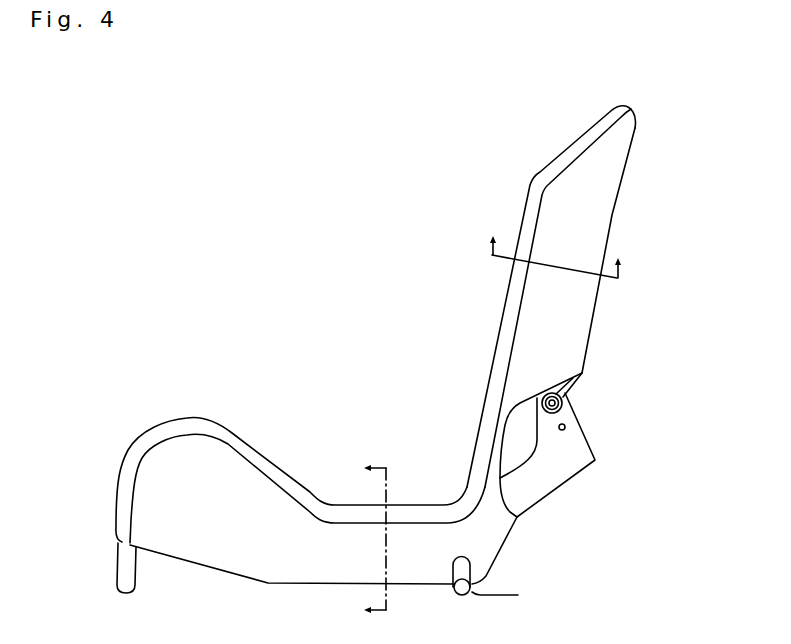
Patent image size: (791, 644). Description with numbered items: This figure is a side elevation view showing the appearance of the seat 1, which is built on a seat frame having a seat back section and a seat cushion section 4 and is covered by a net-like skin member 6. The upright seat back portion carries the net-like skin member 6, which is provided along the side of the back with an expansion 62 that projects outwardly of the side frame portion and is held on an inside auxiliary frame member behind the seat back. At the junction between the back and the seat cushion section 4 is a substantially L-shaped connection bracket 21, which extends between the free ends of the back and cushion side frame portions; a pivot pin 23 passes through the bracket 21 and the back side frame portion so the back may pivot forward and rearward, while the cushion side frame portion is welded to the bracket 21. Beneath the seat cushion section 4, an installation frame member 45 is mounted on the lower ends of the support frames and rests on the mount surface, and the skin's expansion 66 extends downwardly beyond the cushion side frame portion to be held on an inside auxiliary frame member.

The seat 1 is at (655, 212).
The seat cushion section 4 is at (118, 565).
The net-like skin member 6 is at (489, 354).
The expansion 62 is at (582, 315).
The connection bracket 21 is at (563, 468).
The pivot pin 23 is at (566, 399).
The installation frame member 45 is at (462, 596).
The expansion 66 is at (335, 573).